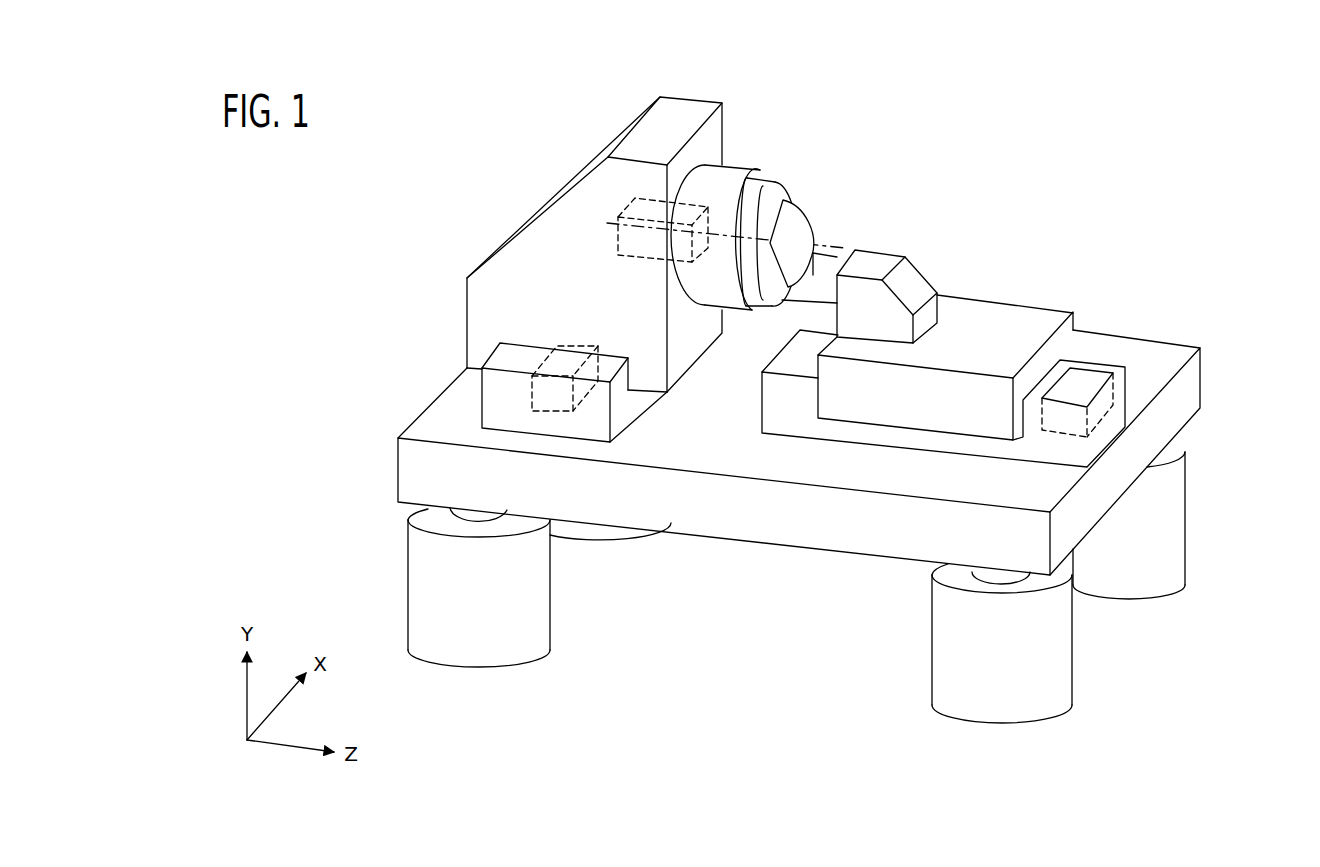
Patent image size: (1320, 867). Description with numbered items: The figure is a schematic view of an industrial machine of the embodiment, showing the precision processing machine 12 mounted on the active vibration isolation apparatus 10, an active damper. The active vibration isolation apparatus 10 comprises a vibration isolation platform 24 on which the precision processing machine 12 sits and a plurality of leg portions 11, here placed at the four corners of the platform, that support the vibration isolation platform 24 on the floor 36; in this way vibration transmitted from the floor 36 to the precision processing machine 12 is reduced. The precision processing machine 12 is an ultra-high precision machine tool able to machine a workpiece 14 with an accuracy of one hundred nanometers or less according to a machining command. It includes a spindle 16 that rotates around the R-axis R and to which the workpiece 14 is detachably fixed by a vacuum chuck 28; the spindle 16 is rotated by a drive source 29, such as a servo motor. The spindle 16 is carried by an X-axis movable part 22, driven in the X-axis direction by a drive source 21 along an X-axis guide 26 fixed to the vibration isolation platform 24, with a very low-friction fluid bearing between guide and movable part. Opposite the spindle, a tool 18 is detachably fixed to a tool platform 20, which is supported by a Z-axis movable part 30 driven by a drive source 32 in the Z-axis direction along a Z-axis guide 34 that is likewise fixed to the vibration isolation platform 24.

The active vibration isolation apparatus 10 is at (1003, 500).
The leg portions 11 is at (540, 622).
The precision processing machine 12 is at (778, 120).
The workpiece 14 is at (792, 222).
The spindle 16 is at (735, 178).
The tool 18 is at (827, 263).
The tool platform 20 is at (908, 272).
The drive source 21 is at (568, 350).
The X-axis movable part 22 is at (670, 110).
The vibration isolation platform 24 is at (1137, 343).
The X-axis guide 26 is at (492, 398).
The vacuum chuck 28 is at (773, 187).
The drive source 29 is at (642, 252).
The Z-axis movable part 30 is at (998, 313).
The drive source 32 is at (1062, 425).
The Z-axis guide 34 is at (882, 440).
The floor 36 is at (745, 655).
The R-axis R is at (632, 228).